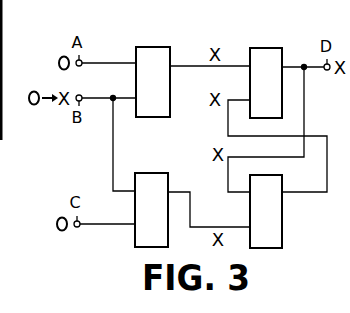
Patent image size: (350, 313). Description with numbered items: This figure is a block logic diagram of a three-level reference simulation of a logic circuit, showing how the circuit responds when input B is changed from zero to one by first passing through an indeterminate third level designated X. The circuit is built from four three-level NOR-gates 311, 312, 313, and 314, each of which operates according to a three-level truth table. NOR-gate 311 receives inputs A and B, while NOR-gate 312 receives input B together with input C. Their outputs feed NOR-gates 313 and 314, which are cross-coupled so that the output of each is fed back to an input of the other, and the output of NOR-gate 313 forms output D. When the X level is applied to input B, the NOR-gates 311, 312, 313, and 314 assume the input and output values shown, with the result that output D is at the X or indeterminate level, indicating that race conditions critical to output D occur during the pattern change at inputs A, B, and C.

The three level NOR-gate 311 is at (144, 47).
The three level NOR-gate 312 is at (142, 243).
The three level NOR-gate 313 is at (272, 48).
The three level NOR-gate 314 is at (278, 246).